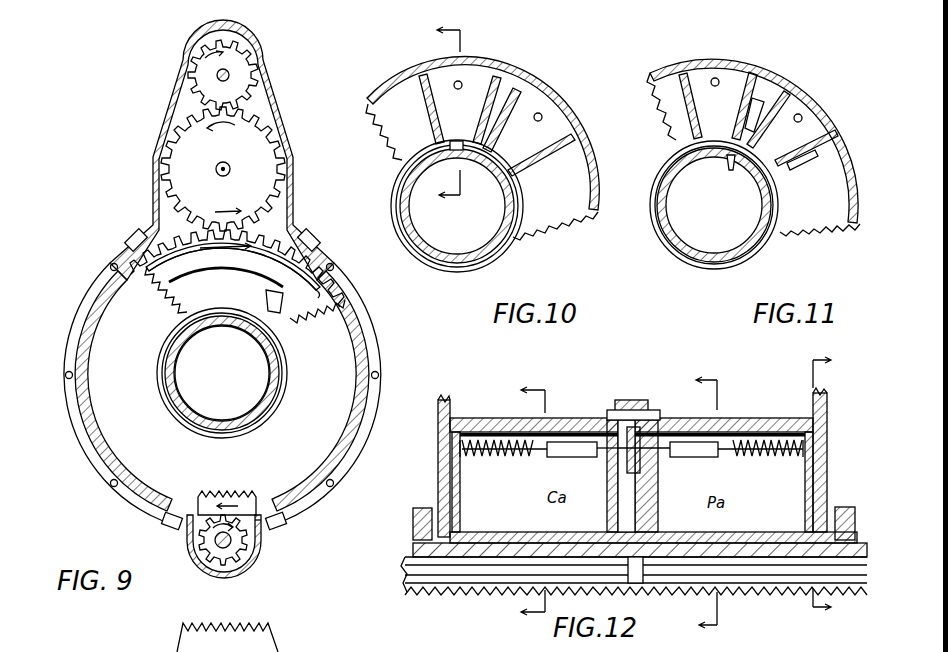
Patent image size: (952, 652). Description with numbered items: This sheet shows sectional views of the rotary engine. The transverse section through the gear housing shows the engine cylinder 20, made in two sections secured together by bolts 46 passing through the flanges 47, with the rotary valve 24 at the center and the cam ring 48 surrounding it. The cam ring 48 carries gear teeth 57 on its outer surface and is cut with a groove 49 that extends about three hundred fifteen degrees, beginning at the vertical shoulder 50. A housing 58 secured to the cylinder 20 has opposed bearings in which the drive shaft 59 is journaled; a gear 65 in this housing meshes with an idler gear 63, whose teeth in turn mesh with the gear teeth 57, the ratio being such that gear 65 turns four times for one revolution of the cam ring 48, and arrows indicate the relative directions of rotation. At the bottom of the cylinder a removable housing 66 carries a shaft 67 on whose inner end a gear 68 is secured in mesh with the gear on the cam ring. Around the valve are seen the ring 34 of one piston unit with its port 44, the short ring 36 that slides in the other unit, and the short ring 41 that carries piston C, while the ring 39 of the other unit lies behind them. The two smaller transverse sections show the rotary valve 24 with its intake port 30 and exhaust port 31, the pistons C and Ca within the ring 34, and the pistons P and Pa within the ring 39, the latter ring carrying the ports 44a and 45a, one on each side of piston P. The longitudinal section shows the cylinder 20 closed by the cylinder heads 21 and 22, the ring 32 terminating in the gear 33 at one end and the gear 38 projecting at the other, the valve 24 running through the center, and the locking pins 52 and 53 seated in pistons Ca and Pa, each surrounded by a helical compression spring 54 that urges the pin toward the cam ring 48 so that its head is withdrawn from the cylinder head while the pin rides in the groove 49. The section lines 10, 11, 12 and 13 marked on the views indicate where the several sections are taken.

In FIG. 12, the section line 10 is at (521, 502).
In FIG. 12, the section line 11 is at (695, 504).
In FIG. 10, the section line 12 is at (437, 115).
In FIG. 12, the section line 13- 13 is at (832, 485).
In FIG. 12, the engine cylinder 20 is at (586, 397).
In FIG. 10, the cylinder head 21 is at (482, 148).
In FIG. 12, the cylinder head 21 is at (440, 483).
In FIG. 12, the cylinder head 22 is at (827, 412).
In FIG. 9, the rotary valve 24 is at (177, 386).
In FIG. 12, the rotary valve 24 is at (405, 567).
In FIG. 10, the intake port 30 is at (455, 158).
In FIG. 11, the exhaust port 31 is at (770, 172).
In FIG. 12, the ring 32 is at (413, 545).
In FIG. 12, the gear 33 is at (413, 523).
In FIG. 9, the ring 34 is at (226, 277).
In FIG. 12, the ring 34 is at (617, 513).
In FIG. 9, the cylindrical member or ring 36 is at (157, 366).
In FIG. 12, the gear 38 is at (838, 507).
In FIG. 9, the ring 39 is at (287, 445).
In FIG. 11, the ring 39 is at (753, 147).
In FIG. 9, the short ring 41 is at (187, 409).
In FIG. 9, the port 44 is at (266, 297).
In FIG. 11, the port 44a is at (763, 102).
In FIG. 11, the port 45a is at (817, 160).
In FIG. 9, the bolts 46 is at (118, 250).
In FIG. 12, the bolts 46 is at (662, 413).
In FIG. 9, the flanges 47 is at (88, 295).
In FIG. 12, the flanges 47 is at (625, 400).
In FIG. 9, the cam ring 48 is at (200, 497).
In FIG. 12, the cam ring 48 is at (638, 468).
In FIG. 9, the groove 49 is at (283, 261).
In FIG. 9, the vertical shoulder 50 is at (311, 299).
In FIG. 12, the locking pin 52 is at (538, 457).
In FIG. 12, the locking pin 53 is at (727, 457).
In FIG. 12, the helical compression spring 54 is at (485, 456).
In FIG. 9, the gear teeth 57 is at (270, 243).
In FIG. 9, the housing 58 is at (158, 132).
In FIG. 9, the drive shaft 59 is at (216, 75).
In FIG. 9, the idler gear 63 is at (223, 169).
In FIG. 9, the gear 65 is at (223, 75).
In FIG. 9, the removable housing 66 is at (190, 545).
In FIG. 9, the shaft 67 is at (210, 565).
In FIG. 9, the gear 68 is at (240, 547).